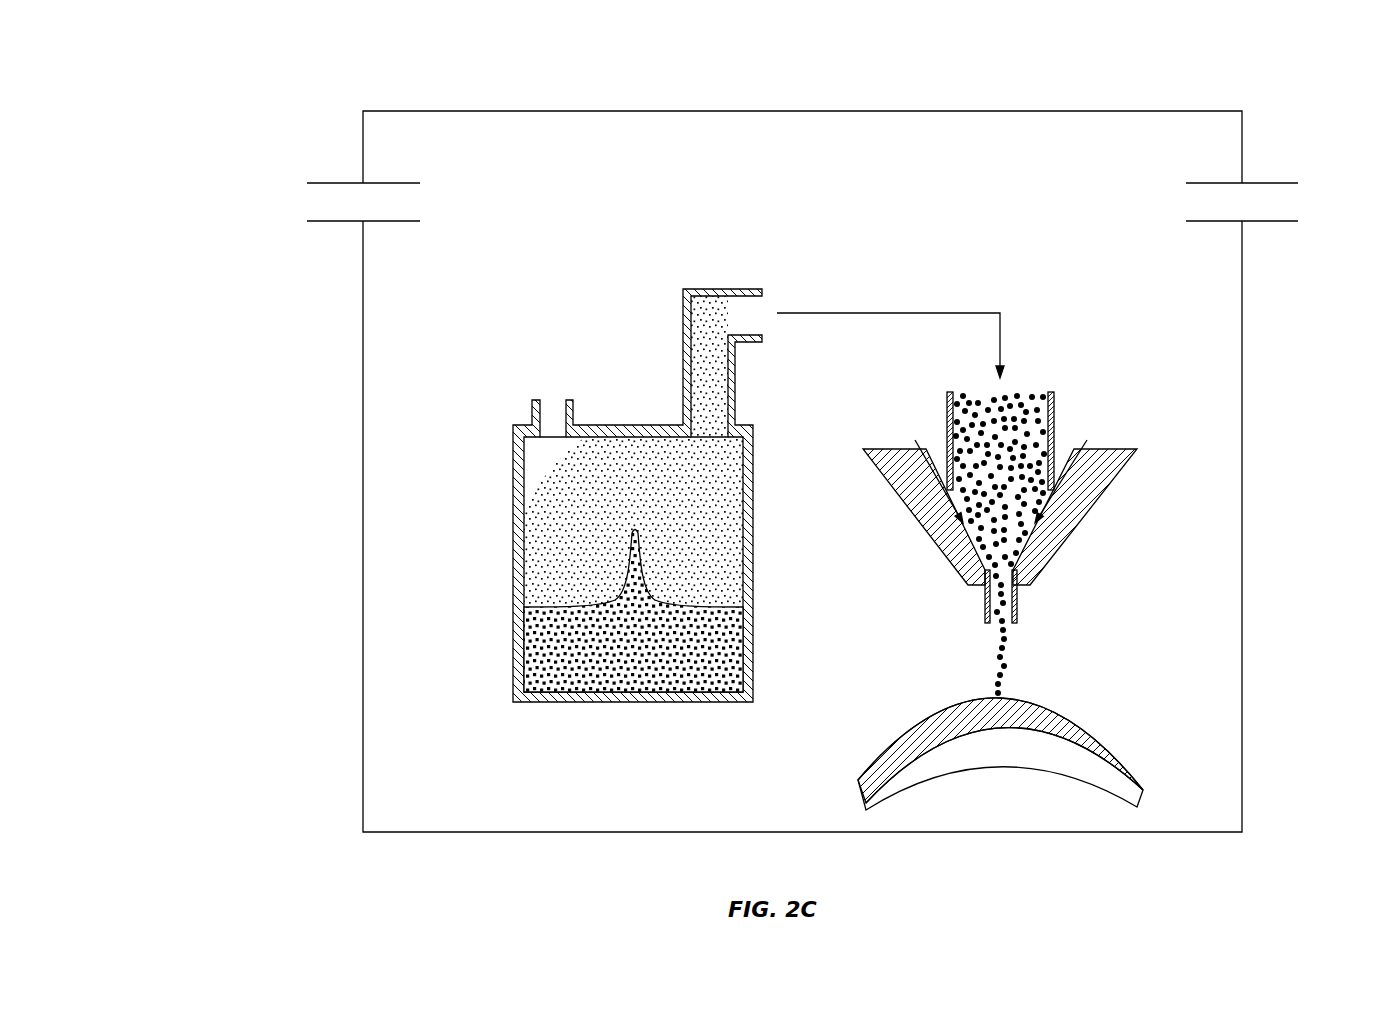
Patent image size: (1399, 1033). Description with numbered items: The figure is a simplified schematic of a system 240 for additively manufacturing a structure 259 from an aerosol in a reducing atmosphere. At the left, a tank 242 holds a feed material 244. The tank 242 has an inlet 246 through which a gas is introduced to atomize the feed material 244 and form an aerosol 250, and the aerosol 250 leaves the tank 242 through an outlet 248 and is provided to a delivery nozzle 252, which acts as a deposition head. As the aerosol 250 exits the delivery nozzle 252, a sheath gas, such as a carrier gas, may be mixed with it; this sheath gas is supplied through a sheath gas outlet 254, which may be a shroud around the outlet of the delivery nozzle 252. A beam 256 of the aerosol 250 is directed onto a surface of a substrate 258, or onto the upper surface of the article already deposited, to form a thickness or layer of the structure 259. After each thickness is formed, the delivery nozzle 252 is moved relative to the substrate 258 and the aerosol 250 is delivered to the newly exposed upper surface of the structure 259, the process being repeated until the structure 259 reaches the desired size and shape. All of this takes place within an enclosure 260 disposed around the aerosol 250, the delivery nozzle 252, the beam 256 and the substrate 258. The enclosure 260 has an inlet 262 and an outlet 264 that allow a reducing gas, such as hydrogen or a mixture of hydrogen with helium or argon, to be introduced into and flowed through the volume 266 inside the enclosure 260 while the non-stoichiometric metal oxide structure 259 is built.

The system 240 is at (175, 112).
The tank 242 is at (513, 517).
The feed material 244 is at (525, 652).
The inlet 246 is at (553, 388).
The outlet 248 is at (732, 303).
The aerosol 250 is at (913, 313).
The delivery nozzle 252 is at (1010, 417).
The sheath gas outlet 254 is at (1030, 450).
The beam 256 is at (1007, 655).
The substrate 258 is at (1087, 758).
The structure 259 is at (1057, 718).
The enclosure 260 is at (1243, 405).
The inlet 262 is at (327, 205).
The outlet 264 is at (1267, 203).
The volume 266 is at (922, 176).